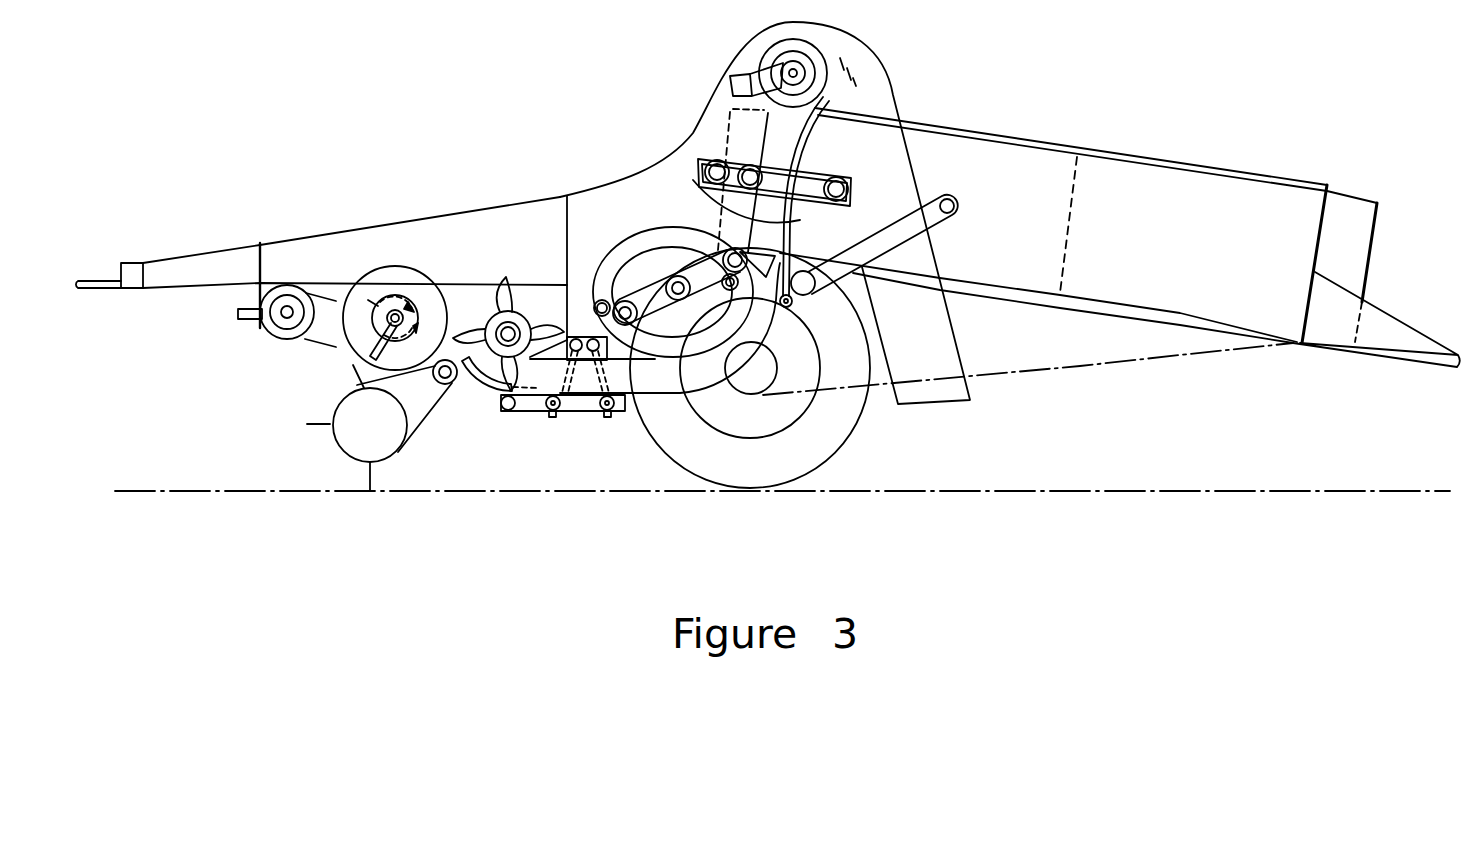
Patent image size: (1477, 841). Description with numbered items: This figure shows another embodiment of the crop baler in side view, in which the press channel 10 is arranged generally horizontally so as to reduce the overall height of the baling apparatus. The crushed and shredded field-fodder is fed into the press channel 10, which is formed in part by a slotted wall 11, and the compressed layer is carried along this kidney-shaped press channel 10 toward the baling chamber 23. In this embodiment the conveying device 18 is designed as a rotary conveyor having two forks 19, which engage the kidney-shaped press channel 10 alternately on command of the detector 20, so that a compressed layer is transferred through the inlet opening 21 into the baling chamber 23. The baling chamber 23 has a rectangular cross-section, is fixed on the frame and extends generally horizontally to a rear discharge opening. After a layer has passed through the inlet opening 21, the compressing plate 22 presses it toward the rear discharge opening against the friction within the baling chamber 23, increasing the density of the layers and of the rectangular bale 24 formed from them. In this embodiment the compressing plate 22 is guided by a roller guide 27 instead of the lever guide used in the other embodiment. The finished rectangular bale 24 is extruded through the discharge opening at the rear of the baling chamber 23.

The press channel 10 is at (683, 373).
The slotted wall 11 is at (547, 376).
The conveying device 18 is at (657, 295).
The forks 19 is at (733, 257).
The detector 20 is at (784, 306).
The inlet opening 21 is at (702, 157).
The compressing plate 22 is at (732, 106).
The baling chamber 23 is at (972, 157).
The rectangular bale 24 is at (1027, 170).
The roller guide 27 is at (817, 180).